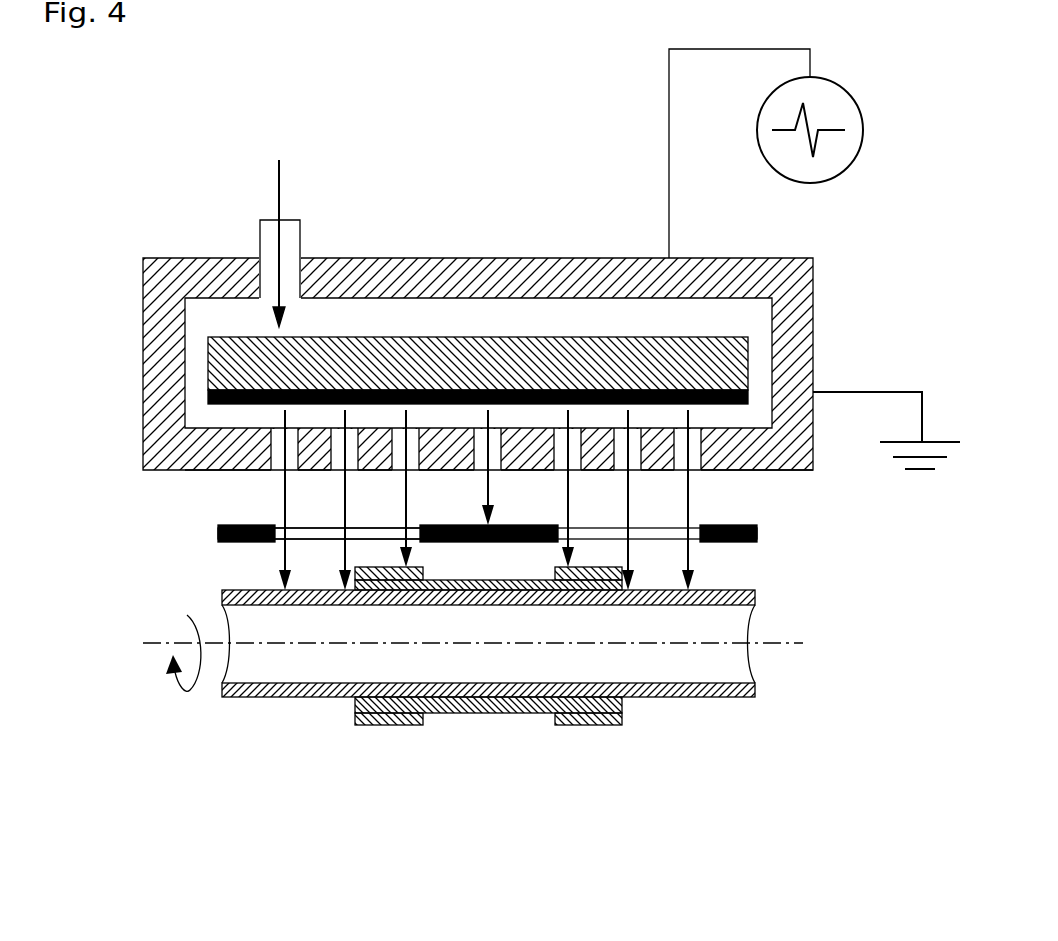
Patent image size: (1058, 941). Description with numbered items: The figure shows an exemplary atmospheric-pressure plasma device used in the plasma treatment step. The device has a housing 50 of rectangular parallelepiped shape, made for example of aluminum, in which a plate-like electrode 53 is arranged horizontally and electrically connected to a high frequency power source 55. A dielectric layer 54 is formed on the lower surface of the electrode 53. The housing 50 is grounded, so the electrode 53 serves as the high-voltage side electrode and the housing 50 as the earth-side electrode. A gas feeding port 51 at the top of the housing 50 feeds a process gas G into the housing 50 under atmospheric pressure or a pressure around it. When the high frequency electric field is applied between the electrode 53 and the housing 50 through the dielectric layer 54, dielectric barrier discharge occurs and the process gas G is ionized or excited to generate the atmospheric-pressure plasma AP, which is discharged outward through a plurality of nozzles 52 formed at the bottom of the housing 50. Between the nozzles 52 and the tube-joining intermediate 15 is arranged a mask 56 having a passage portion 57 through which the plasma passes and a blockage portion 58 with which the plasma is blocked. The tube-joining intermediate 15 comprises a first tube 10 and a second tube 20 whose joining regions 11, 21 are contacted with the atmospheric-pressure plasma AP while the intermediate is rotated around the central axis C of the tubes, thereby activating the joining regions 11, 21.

The first tube 10 is at (477, 714).
The joining region of the first tube 11 is at (388, 727).
The tube-joining intermediate 15 is at (756, 576).
The second tube 20 is at (494, 688).
The joining region of the second tube 21 is at (322, 697).
The housing 50 is at (465, 272).
The gas feeding port 51 is at (260, 243).
The nozzles 52 is at (700, 455).
The electrode 53 is at (232, 337).
The dielectric layer 54 is at (232, 404).
The high frequency power source 55 is at (790, 182).
The mask 56 is at (218, 533).
The passage portion 57 is at (280, 542).
The blockage portion 58 is at (245, 525).
The process gas G is at (283, 182).
The atmospheric-pressure plasma AP is at (690, 492).
The central axis C is at (780, 647).